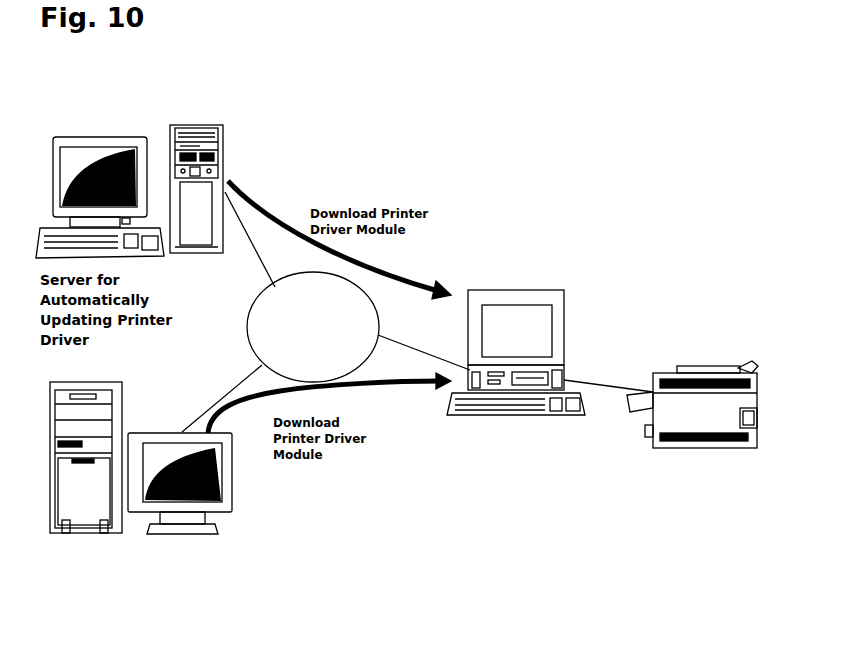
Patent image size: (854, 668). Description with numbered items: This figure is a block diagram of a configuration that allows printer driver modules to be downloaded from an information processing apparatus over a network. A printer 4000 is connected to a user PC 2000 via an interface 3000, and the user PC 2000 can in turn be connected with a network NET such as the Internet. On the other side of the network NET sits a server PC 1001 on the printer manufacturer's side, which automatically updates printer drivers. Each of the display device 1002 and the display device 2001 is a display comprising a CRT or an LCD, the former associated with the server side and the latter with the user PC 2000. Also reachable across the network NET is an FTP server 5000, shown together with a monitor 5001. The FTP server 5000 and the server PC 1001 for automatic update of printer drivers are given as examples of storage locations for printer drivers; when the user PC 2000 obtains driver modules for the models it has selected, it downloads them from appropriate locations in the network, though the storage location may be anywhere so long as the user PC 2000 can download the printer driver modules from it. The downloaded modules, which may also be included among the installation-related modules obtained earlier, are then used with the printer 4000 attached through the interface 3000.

The server PC 1001 is at (72, 137).
The display device 1002 is at (200, 125).
The network NET is at (247, 323).
The user PC 2000 is at (477, 388).
The display device 2001 is at (516, 290).
The interface 3000 is at (593, 385).
The printer 4000 is at (757, 420).
The FTP server 5000 is at (72, 533).
The display of FTP server 5001 is at (233, 473).